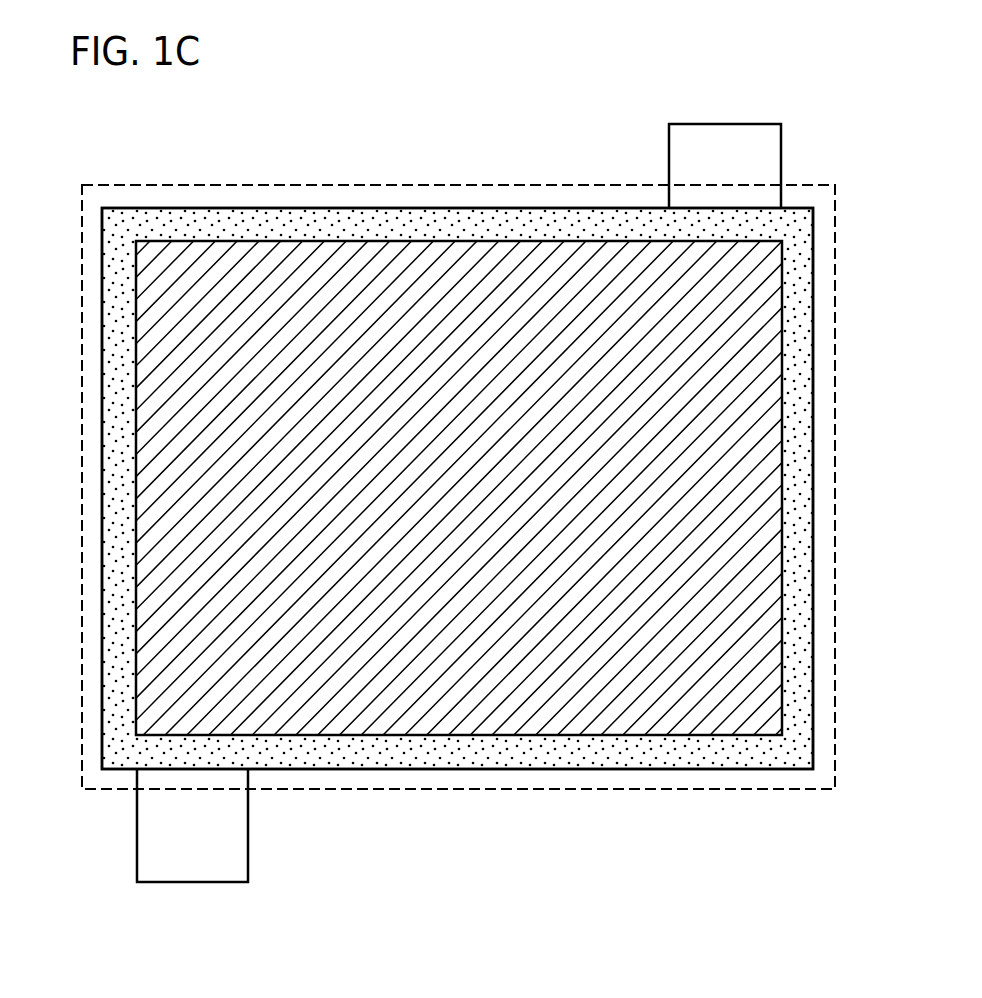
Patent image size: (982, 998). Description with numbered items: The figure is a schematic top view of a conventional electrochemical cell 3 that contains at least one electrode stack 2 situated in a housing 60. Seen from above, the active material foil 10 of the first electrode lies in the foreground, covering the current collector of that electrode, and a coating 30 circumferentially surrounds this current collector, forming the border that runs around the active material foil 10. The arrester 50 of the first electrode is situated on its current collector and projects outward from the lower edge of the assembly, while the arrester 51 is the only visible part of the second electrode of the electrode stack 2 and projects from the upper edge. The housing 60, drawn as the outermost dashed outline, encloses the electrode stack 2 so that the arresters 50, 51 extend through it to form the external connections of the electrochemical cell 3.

The electrochemical cell 3 is at (95, 176).
The electrode stack 2 is at (100, 430).
The active material foil 10 is at (442, 248).
The coating 30 is at (793, 388).
The housing 60 is at (405, 790).
The arrester 50 is at (190, 884).
The arrester 51 is at (724, 124).